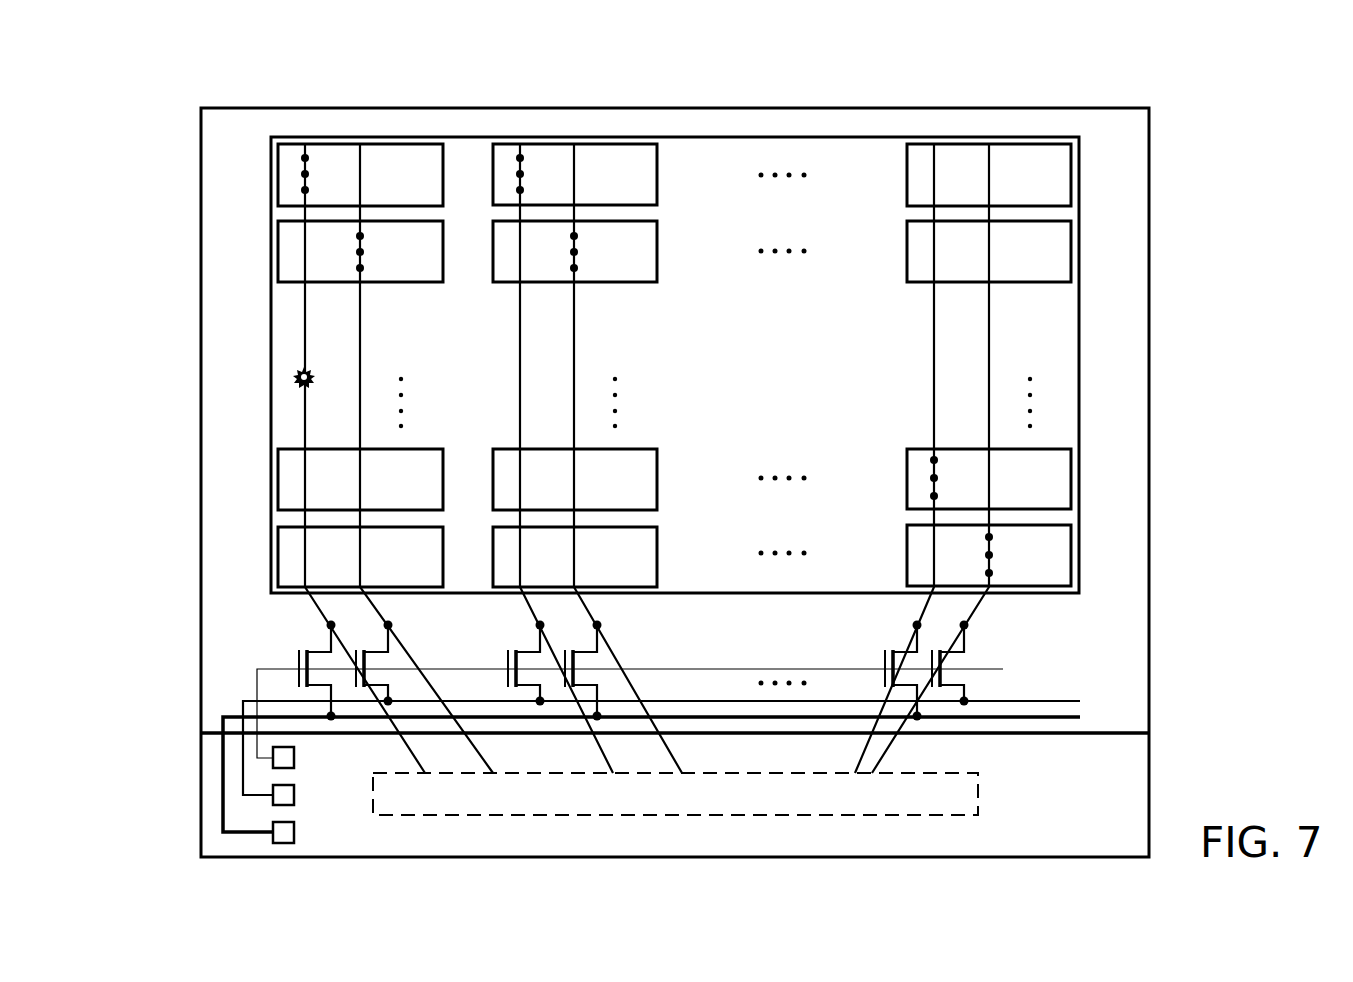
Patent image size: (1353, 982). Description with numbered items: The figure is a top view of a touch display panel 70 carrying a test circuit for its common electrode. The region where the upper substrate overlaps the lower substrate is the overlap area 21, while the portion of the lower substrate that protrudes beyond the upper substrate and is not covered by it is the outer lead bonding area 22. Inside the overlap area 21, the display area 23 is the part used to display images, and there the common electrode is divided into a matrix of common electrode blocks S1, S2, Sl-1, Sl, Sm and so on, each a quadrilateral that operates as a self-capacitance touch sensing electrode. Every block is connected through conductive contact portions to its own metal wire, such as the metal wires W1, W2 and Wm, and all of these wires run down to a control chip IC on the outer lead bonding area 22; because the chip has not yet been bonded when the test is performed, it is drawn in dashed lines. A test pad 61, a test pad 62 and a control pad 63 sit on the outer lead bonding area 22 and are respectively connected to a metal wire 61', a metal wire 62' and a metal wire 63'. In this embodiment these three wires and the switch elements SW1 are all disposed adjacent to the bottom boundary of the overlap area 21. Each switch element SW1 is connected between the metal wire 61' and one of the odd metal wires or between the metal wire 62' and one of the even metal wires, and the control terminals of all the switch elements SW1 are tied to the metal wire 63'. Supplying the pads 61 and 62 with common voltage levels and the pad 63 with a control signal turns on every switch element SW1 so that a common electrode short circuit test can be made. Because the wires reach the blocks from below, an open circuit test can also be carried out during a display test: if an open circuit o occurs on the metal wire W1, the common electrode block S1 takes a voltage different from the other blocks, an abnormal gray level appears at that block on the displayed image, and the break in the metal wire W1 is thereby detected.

The touch display panel 70 is at (1220, 41).
The overlap area 21 is at (1118, 518).
The outer lead bonding (OLB) area 22 is at (1118, 773).
The display area 23 is at (1055, 403).
The metal wire W1 is at (305, 311).
The metal wire W2 is at (362, 310).
The metal wire Wm is at (934, 312).
The common electrode block S1 is at (360, 175).
The common electrode block S2 is at (360, 251).
The common electrode block Sl-1 is at (360, 479).
The common electrode block Sl is at (360, 557).
The common electrode block Sm is at (989, 479).
The switch element SW1 is at (300, 648).
The test pad 61 is at (319, 833).
The test pad 62 is at (319, 795).
The control pad 63 is at (319, 755).
The metal wire 61' is at (599, 774).
The metal wire 62' is at (599, 748).
The metal wire 63' is at (560, 713).
The control chip IC is at (675, 794).
The open circuit o is at (312, 377).